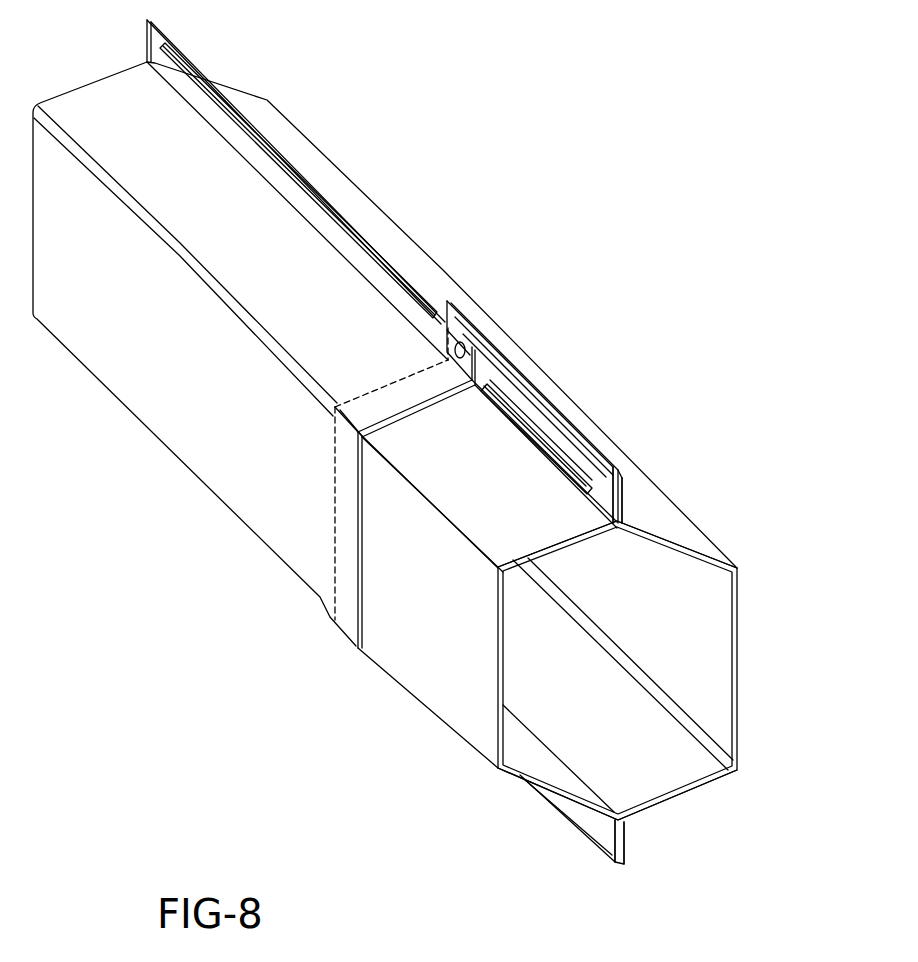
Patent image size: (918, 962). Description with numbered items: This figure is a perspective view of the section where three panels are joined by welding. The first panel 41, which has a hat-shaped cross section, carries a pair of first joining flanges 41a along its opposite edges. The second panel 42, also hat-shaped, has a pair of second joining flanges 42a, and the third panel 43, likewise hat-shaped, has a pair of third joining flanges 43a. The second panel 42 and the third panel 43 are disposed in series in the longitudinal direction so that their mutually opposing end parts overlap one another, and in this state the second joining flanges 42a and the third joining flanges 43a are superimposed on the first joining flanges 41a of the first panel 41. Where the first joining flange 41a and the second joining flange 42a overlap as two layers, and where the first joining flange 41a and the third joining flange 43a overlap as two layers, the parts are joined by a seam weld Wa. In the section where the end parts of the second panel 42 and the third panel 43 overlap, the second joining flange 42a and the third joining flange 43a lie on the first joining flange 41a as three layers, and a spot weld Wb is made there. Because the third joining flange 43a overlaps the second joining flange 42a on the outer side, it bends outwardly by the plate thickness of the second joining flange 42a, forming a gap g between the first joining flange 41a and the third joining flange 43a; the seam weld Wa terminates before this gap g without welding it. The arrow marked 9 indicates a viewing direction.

The first panel 41 is at (550, 352).
The first joining flange 41a is at (623, 488).
The second panel 42 is at (411, 713).
The second joining flange 42a is at (597, 473).
The third panel 43 is at (128, 426).
The third joining flange 43a is at (190, 62).
The seam weld Wa is at (283, 172).
The spot weld Wb is at (460, 330).
The gap g is at (451, 337).
The viewing direction of FIG. 9 is at (296, 445).